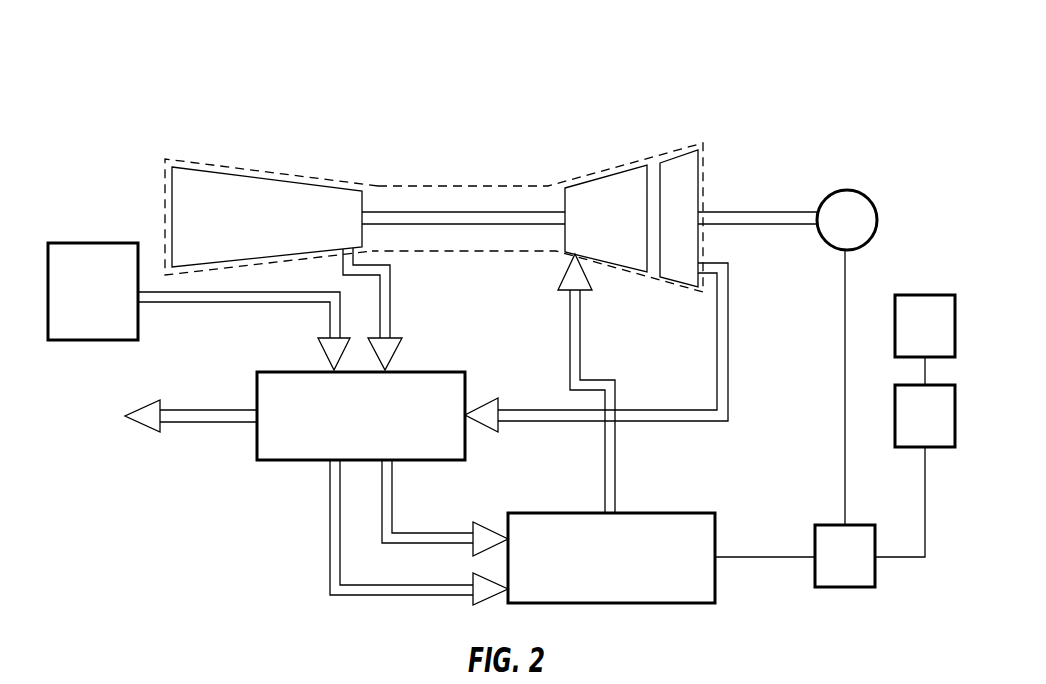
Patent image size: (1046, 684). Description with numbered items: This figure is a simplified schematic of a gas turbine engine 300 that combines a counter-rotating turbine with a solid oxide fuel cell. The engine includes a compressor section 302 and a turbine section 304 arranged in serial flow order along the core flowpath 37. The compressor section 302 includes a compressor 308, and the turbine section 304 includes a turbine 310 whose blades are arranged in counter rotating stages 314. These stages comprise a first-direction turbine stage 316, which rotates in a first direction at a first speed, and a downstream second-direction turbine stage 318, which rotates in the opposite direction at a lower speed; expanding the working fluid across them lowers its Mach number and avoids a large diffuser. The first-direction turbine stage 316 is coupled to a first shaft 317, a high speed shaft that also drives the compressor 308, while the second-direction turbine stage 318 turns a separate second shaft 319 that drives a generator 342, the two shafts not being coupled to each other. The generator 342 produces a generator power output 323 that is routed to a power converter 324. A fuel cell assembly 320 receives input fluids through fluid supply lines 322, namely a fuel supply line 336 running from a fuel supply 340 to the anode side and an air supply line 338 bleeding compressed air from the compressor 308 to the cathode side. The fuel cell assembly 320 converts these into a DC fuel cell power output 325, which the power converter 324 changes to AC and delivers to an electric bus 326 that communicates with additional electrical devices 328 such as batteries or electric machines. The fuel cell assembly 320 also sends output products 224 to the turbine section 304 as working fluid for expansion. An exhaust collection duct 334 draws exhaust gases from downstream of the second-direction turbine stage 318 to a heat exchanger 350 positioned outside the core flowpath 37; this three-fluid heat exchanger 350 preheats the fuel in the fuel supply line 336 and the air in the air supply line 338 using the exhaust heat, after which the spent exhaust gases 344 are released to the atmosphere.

The gas turbine engine 300 is at (718, 83).
The compressor section 302 is at (246, 140).
The turbine section 304 is at (653, 110).
The core flowpath 37 is at (425, 184).
The compressor 308 is at (284, 233).
The turbine 310 is at (595, 115).
The counter rotating stages 314 is at (740, 118).
The first-direction turbine stage 316 is at (624, 233).
The first shaft 317 is at (447, 226).
The second-direction turbine stage 318 is at (683, 188).
The second shaft 319 is at (783, 212).
The fuel cell assembly 320 is at (685, 592).
The fluid supply lines 322 is at (157, 291).
The generator power output 323 is at (844, 330).
The power converter 324 is at (862, 572).
The fuel cell power output 325 is at (737, 557).
The electric bus 326 is at (942, 429).
The additional electrical devices 328 is at (942, 339).
The exhaust collection duct 334 is at (723, 357).
The fuel supply line 336 is at (330, 545).
The air supply line 338 is at (391, 298).
The fuel supply 340 is at (110, 307).
The generator 342 is at (866, 191).
The spent exhaust gases 344 is at (180, 408).
The heat exchanger 350 is at (256, 443).
The output products 224 is at (615, 480).